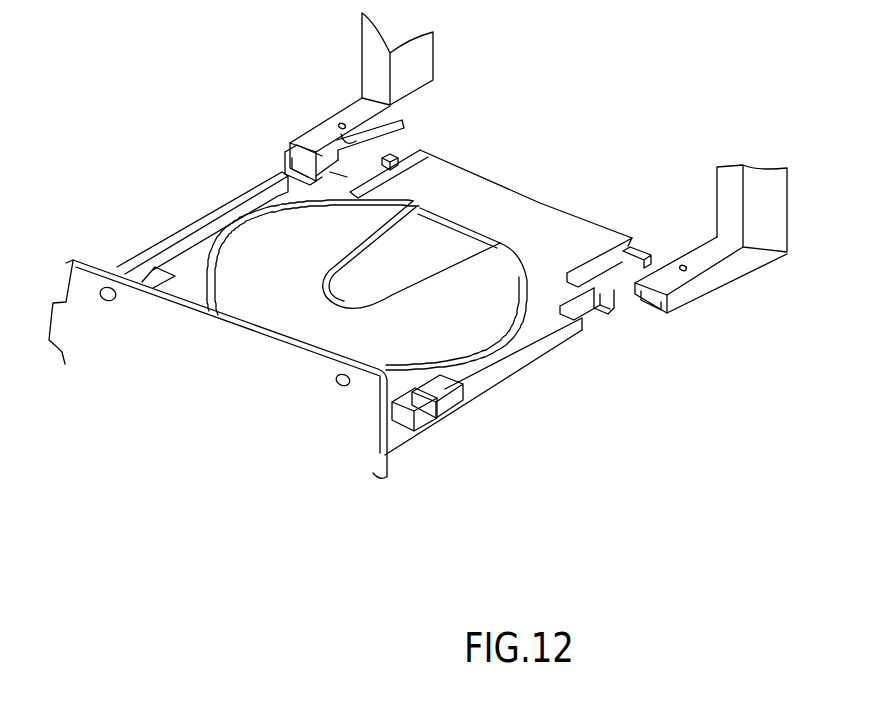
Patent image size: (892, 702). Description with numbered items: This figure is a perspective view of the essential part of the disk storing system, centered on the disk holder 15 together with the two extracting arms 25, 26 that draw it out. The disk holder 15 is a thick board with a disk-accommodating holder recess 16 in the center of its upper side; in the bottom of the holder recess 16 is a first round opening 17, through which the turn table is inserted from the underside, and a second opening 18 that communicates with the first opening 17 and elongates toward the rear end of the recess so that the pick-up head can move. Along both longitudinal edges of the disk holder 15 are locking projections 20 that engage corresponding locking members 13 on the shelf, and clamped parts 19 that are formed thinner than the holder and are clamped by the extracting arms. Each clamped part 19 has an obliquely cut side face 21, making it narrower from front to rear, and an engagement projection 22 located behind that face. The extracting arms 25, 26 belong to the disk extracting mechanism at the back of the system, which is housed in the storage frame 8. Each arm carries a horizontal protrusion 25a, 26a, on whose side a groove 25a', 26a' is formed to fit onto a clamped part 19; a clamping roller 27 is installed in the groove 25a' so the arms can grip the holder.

The storage frame 8 is at (390, 455).
The locking member 13 is at (140, 277).
The disk holder 15 is at (517, 380).
The holder recess 16 is at (487, 357).
The first round opening 17 is at (381, 297).
The second opening 18 is at (447, 275).
The clamped part 19 is at (283, 152).
The locking projection 20 is at (268, 179).
The obliquely cut side face 21 is at (380, 180).
The engagement projection 22 is at (398, 157).
The extracting arm 25 is at (355, 57).
The horizontal protrusion 25a is at (340, 114).
The groove 25a' is at (281, 132).
The extracting arm 26 is at (792, 237).
The horizontal protrusion 26a is at (711, 308).
The groove 26a' is at (694, 343).
The clamping roller 27 is at (403, 113).